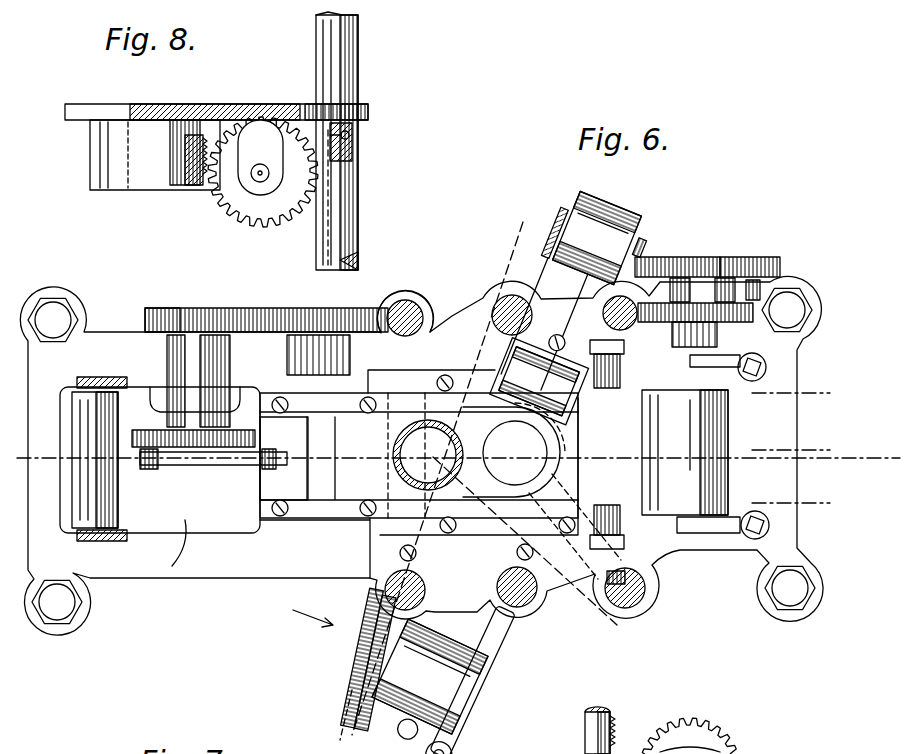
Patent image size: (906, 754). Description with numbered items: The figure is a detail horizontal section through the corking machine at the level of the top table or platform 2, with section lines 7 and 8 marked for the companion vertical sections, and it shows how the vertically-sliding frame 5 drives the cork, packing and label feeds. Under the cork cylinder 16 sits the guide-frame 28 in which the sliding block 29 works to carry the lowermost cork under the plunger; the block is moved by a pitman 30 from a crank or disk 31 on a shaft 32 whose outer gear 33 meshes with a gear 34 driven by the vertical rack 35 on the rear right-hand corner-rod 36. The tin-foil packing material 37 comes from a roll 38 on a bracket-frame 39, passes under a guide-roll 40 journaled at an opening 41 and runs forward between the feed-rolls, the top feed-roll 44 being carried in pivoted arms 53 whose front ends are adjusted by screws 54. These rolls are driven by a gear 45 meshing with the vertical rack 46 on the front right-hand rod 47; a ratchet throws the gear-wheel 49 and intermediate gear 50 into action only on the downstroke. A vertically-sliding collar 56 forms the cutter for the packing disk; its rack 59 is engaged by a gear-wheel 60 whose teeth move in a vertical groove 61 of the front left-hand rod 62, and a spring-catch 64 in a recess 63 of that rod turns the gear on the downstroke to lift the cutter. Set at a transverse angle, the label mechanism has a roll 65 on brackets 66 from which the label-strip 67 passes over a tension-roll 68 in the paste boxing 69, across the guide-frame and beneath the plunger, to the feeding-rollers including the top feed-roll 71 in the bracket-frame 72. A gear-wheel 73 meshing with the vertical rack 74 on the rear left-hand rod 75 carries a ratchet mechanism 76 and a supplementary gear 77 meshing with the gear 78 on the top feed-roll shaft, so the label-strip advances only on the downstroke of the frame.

In FIG. 8, the top table or platform 2 is at (283, 106).
In FIG. 6, the top table or platform 2 is at (458, 455).
In FIG. 6, the vertically-sliding frame 5 is at (530, 604).
In FIG. 6, the section line 7 7 is at (412, 467).
In FIG. 6, the section line 8 8 is at (521, 554).
In FIG. 6, the vertical tube or cylinder 16 is at (428, 455).
In FIG. 6, the guide-frame 28 is at (372, 440).
In FIG. 6, the sliding block 29 is at (284, 458).
In FIG. 6, the pitman 30 is at (195, 464).
In FIG. 6, the crank or disk 31 is at (152, 440).
In FIG. 6, the shaft 32 is at (190, 330).
In FIG. 6, the gear 33 is at (155, 308).
In FIG. 6, the gear 34 is at (266, 307).
In FIG. 6, the vertical rack 35 is at (390, 306).
In FIG. 6, the rear right-hand corner-rod 36 is at (412, 300).
In FIG. 6, the tin-foil or analogous packing material 37 is at (419, 460).
In FIG. 6, the roll of packing material 38 is at (562, 458).
In FIG. 6, the bracket-frame 39 is at (98, 377).
In FIG. 6, the guide-roll 40 is at (86, 490).
In FIG. 6, the opening 41 is at (161, 545).
In FIG. 6, the top feed-roll 44 is at (659, 444).
In FIG. 6, the gear 45 is at (665, 322).
In FIG. 6, the vertical rack 46 is at (672, 290).
In FIG. 6, the front right-hand rod 47 is at (628, 328).
In FIG. 6, the gear-wheel 49 is at (702, 257).
In FIG. 6, the intermediate gear 50 is at (760, 260).
In FIG. 6, the arms 53 is at (722, 362).
In FIG. 6, the screws 54 is at (762, 364).
In FIG. 8, the vertically-sliding collar 56 is at (198, 188).
In FIG. 8, the rack 59 is at (190, 150).
In FIG. 8, the gear-wheel 60 is at (263, 172).
In FIG. 8, the vertical groove or recess 61 is at (322, 232).
In FIG. 6, the vertical groove or recess 61 is at (624, 572).
In FIG. 8, the front left-hand rod 62 is at (358, 88).
In FIG. 6, the front left-hand rod 62 is at (640, 600).
In FIG. 8, the recess 63 is at (352, 150).
In FIG. 8, the spring-catch 64 is at (351, 135).
In FIG. 6, the roll 65 is at (597, 237).
In FIG. 6, the brackets 66 is at (553, 240).
In FIG. 6, the label-strip 67 is at (552, 418).
In FIG. 6, the tension-roll 68 is at (539, 381).
In FIG. 6, the boxing 69 is at (556, 376).
In FIG. 6, the top feed-roll 71 is at (430, 676).
In FIG. 6, the bracket-frame 72 is at (487, 679).
In FIG. 6, the gear-wheel 73 is at (394, 731).
In FIG. 6, the vertical rack 74 is at (372, 600).
In FIG. 6, the rear left-hand rod 75 is at (390, 576).
In FIG. 6, the ratchet mechanism 76 is at (618, 735).
In FIG. 6, the supplementary gear 77 is at (355, 643).
In FIG. 6, the gear 78 is at (340, 695).